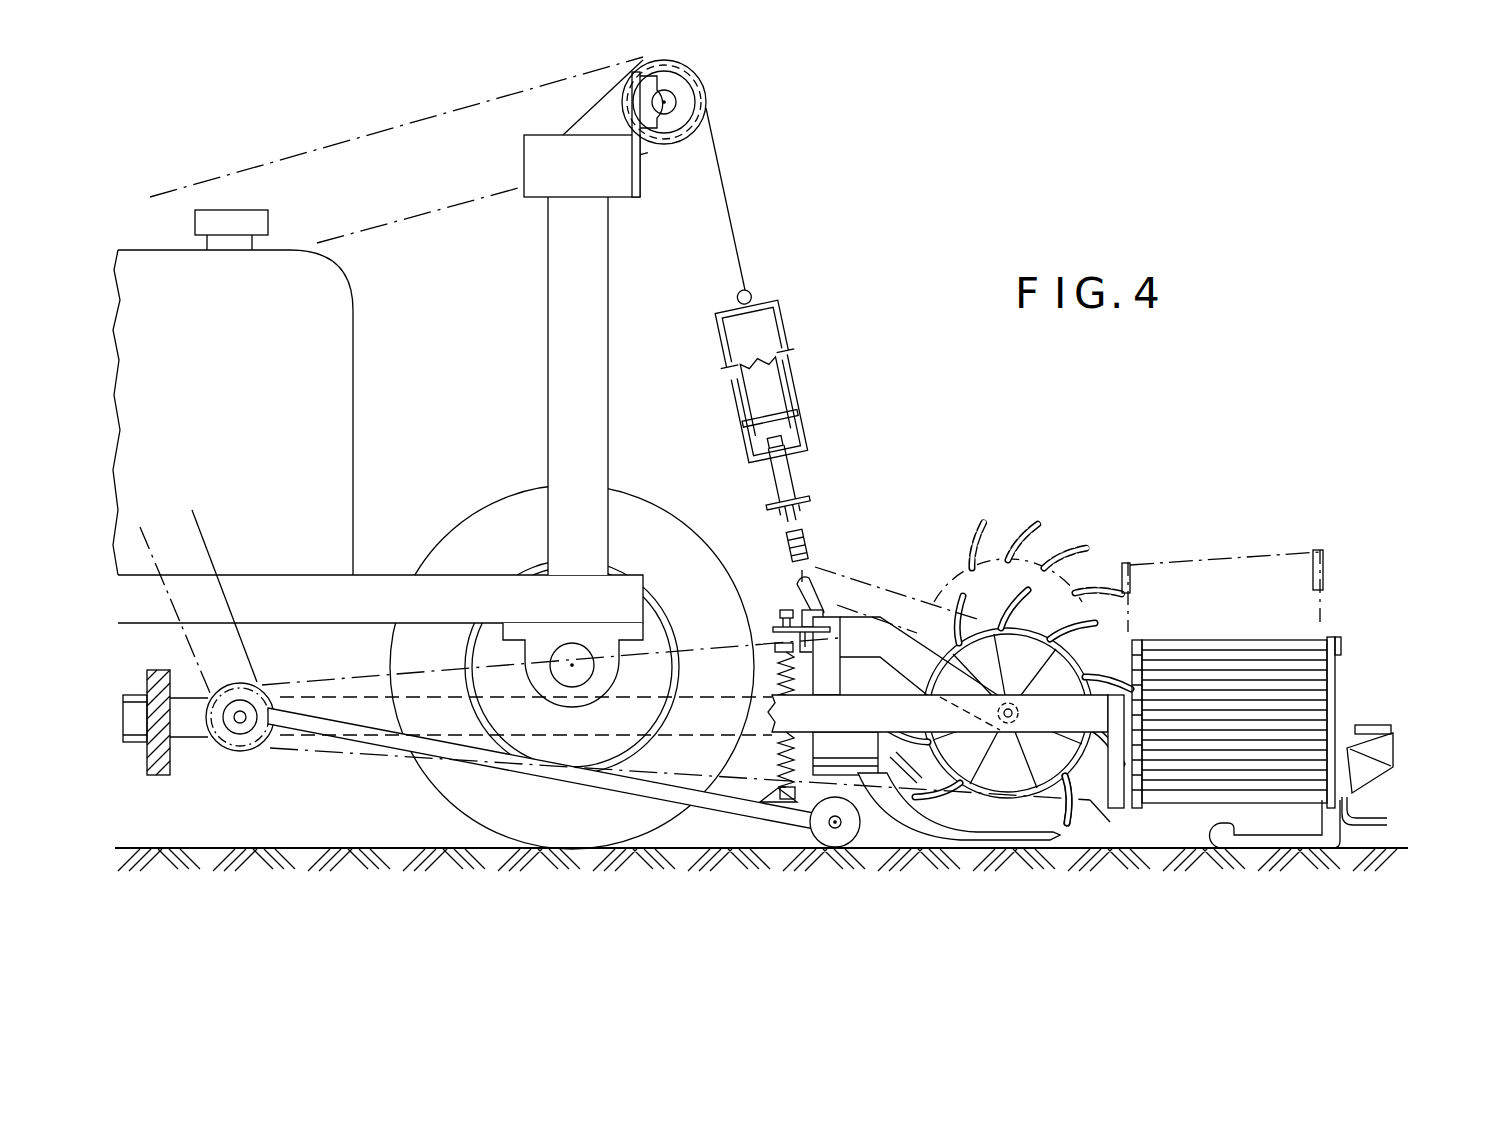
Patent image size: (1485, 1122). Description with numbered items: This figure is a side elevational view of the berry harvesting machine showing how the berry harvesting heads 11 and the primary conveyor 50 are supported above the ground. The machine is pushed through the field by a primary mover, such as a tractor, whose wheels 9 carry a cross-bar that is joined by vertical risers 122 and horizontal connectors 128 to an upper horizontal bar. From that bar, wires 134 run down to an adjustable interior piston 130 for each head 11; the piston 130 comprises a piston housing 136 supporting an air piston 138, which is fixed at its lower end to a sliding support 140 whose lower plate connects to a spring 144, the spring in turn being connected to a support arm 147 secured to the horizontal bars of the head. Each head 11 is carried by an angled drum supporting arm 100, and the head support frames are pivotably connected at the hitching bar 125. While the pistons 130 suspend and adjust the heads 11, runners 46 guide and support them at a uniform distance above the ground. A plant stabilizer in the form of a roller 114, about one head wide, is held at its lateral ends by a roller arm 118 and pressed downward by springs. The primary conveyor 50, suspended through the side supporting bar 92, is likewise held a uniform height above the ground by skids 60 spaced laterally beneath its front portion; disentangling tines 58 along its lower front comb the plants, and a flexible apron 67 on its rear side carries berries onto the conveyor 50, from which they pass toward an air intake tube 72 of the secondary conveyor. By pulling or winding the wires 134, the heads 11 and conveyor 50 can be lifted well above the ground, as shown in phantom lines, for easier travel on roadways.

The wheels 9 is at (473, 515).
The berry harvesting head 11 is at (1070, 642).
The runners 46 is at (1015, 843).
The primary conveyor 50 is at (1213, 640).
The disentangling tines 58 is at (1365, 822).
The skids 60 is at (1308, 848).
The apron 67 is at (1100, 812).
The air intake tube 72 is at (1393, 725).
The side supporting bar 92 is at (914, 730).
The drum supporting arm 100 is at (906, 670).
The plant stabilizer roller 114 is at (842, 847).
The roller arm 118 is at (765, 812).
The vertical riser 122 is at (612, 352).
The hitching bar 125 is at (172, 780).
The horizontal connector 128 is at (645, 172).
The adjustable interior piston 130 is at (816, 424).
The wires 134 is at (727, 192).
The piston housing 136 is at (790, 312).
The air piston 138 is at (785, 411).
The sliding support 140 is at (803, 486).
The spring 144 is at (808, 551).
The support arm 147 is at (812, 595).